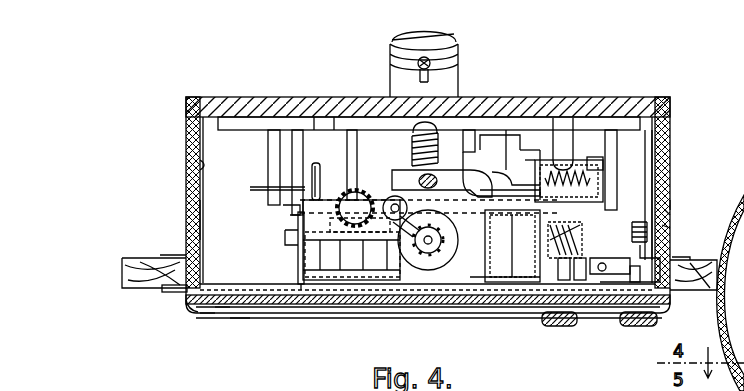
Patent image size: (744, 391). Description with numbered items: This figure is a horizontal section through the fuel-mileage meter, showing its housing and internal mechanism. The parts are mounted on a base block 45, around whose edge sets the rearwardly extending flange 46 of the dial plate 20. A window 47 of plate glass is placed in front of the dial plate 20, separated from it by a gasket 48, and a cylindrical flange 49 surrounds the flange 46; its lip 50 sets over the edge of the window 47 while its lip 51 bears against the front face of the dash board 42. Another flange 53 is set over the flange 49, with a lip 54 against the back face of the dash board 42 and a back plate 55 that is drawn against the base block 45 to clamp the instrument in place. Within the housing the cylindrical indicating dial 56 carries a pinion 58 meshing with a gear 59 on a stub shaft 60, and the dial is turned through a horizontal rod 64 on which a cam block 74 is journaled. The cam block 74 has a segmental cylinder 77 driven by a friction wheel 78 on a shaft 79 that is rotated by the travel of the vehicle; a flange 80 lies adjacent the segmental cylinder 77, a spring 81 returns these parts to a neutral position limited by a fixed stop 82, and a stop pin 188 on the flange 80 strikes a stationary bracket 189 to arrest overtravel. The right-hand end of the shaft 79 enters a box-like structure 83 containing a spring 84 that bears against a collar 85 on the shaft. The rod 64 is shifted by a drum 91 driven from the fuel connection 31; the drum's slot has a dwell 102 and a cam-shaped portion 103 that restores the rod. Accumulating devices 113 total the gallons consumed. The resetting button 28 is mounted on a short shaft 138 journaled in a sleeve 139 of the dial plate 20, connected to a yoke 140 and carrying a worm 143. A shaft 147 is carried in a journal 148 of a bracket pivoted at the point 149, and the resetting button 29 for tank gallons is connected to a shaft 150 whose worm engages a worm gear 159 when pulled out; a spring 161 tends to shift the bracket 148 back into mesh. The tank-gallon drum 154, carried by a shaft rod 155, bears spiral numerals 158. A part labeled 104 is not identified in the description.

The dial plate 20 is at (236, 318).
The resetting button 28 is at (558, 328).
The resetting button 29 is at (640, 330).
The connection 31 is at (396, 40).
The dash board 42 is at (136, 277).
The base block 45 is at (530, 150).
The rearwardly extending flange 46 is at (186, 168).
The window 47 is at (220, 315).
The gasket 48 is at (192, 314).
The cylindrical flange 49 is at (186, 190).
The lip 50 is at (208, 313).
The lip 51 is at (172, 293).
The flange 53 is at (186, 213).
The lip 54 is at (172, 257).
The back plate 55 is at (506, 130).
The indicating dial 56 is at (420, 300).
The pinion 58 is at (406, 292).
The gear 59 is at (370, 292).
The stub shaft 60 is at (395, 205).
The horizontal rod 64 is at (486, 300).
The cam block 74 is at (340, 195).
The segmental cylinder 77 is at (300, 228).
The friction wheel 78 is at (318, 117).
The shaft 79 is at (333, 117).
The flange 80 is at (305, 175).
The spring 81 is at (300, 243).
The fixed stop 82 is at (285, 290).
The box like structure 83 is at (577, 165).
The spring 84 is at (598, 163).
The collar 85 is at (532, 162).
The drum 91 is at (541, 185).
The dwell 102 is at (519, 135).
The cam shaped portion 103 is at (503, 173).
The contact spring 104 is at (464, 253).
The accumulating devices 113 is at (330, 290).
The short shaft 138 is at (505, 300).
The sleeve 139 is at (532, 300).
The yoke 140 is at (634, 240).
The worm 143 is at (670, 200).
The shaft 147 is at (573, 300).
The journal 148 is at (670, 228).
The point 149 is at (600, 300).
The shaft 150 is at (672, 258).
The drum 154 is at (528, 227).
The shaft rod 155 is at (670, 205).
The numerals 158 is at (478, 300).
The worm gear 159 is at (670, 215).
The spring 161 is at (610, 308).
The stop pin 188 is at (260, 191).
The bracket 189 is at (283, 205).